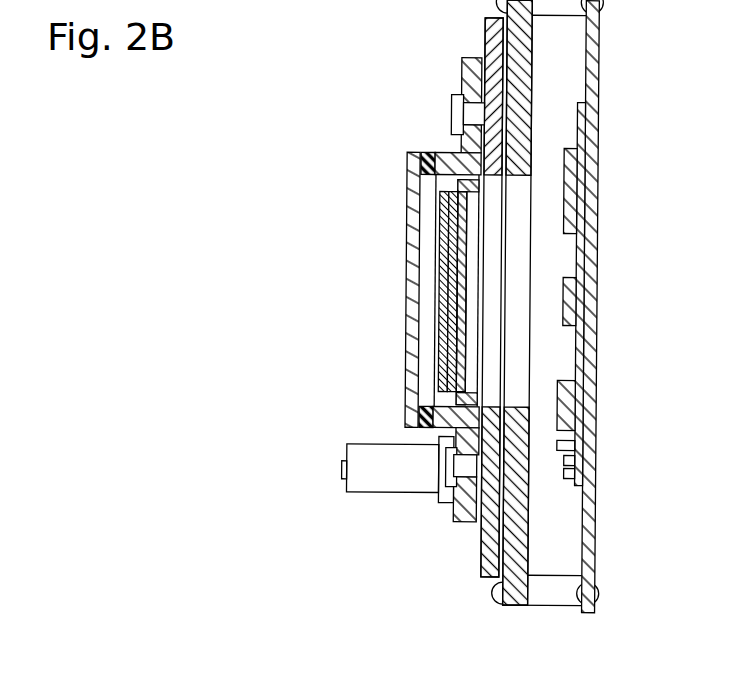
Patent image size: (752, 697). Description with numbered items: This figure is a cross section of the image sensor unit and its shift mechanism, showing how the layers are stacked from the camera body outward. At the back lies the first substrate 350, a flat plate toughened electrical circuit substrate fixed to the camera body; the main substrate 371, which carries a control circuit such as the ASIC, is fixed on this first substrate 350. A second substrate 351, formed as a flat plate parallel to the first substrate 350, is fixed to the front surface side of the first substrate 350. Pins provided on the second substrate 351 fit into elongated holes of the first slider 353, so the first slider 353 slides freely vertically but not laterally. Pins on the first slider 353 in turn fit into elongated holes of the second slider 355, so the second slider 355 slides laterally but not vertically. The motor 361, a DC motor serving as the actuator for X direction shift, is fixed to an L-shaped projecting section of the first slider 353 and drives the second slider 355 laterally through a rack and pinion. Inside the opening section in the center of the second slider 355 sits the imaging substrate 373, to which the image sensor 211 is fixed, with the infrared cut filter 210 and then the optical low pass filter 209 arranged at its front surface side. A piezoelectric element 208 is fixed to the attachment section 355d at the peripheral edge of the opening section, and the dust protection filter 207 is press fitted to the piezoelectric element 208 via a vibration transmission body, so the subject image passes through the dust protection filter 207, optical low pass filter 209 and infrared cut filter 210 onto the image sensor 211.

The dust protection filter 207 is at (408, 197).
The piezoelectric element 208 is at (433, 155).
The optical low pass filter 209 is at (444, 262).
The infrared cut filter 210 is at (448, 298).
The image sensor 211 is at (451, 342).
The first substrate 350 is at (595, 273).
The second substrate 351 is at (513, 606).
The first slider 353 is at (486, 578).
The second slider 355 is at (463, 523).
The attachment section 355d is at (447, 153).
The motor 361 is at (392, 480).
The main substrate 371 is at (574, 371).
The imaging substrate 373 is at (463, 245).